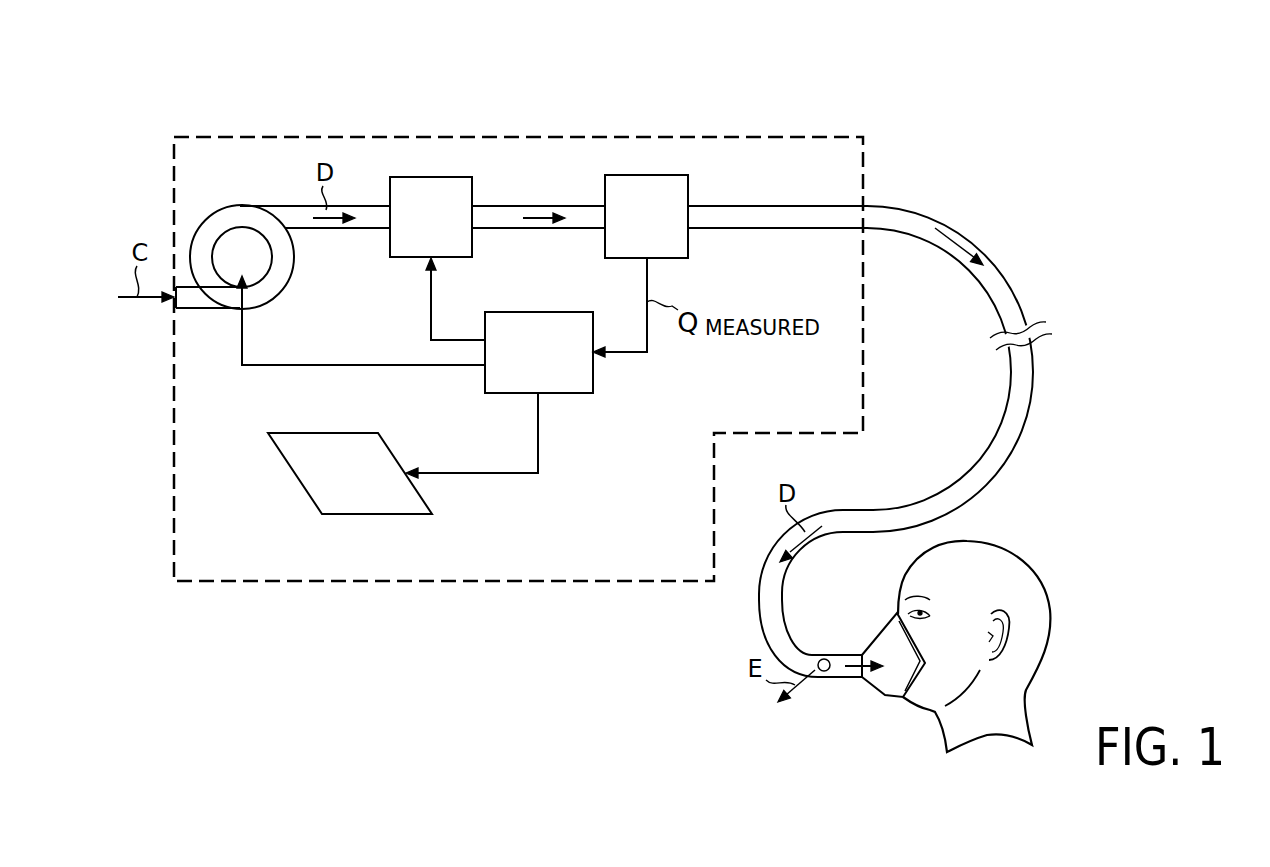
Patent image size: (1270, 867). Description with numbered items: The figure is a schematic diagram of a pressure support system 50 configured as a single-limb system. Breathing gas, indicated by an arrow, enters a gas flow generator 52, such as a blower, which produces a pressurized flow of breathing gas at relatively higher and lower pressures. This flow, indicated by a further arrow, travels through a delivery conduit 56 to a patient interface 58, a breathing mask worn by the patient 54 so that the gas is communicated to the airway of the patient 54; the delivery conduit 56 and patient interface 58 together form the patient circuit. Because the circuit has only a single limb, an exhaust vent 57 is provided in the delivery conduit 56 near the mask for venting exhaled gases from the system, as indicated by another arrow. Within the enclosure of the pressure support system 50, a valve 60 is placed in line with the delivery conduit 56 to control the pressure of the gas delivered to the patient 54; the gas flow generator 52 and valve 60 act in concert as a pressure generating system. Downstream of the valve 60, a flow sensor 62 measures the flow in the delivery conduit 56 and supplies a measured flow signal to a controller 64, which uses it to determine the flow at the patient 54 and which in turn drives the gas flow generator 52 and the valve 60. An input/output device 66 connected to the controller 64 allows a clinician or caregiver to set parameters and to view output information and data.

The pressure support system 50 is at (250, 120).
The gas flow generator 52 is at (232, 206).
The patient 54 is at (1032, 560).
The delivery conduit 56 is at (947, 220).
The exhaust vent 57 is at (825, 675).
The patient interface 58 is at (882, 698).
The valve 60 is at (418, 229).
The flow sensor 62 is at (633, 229).
The controller 64 is at (525, 363).
The input/output device 66 is at (335, 485).